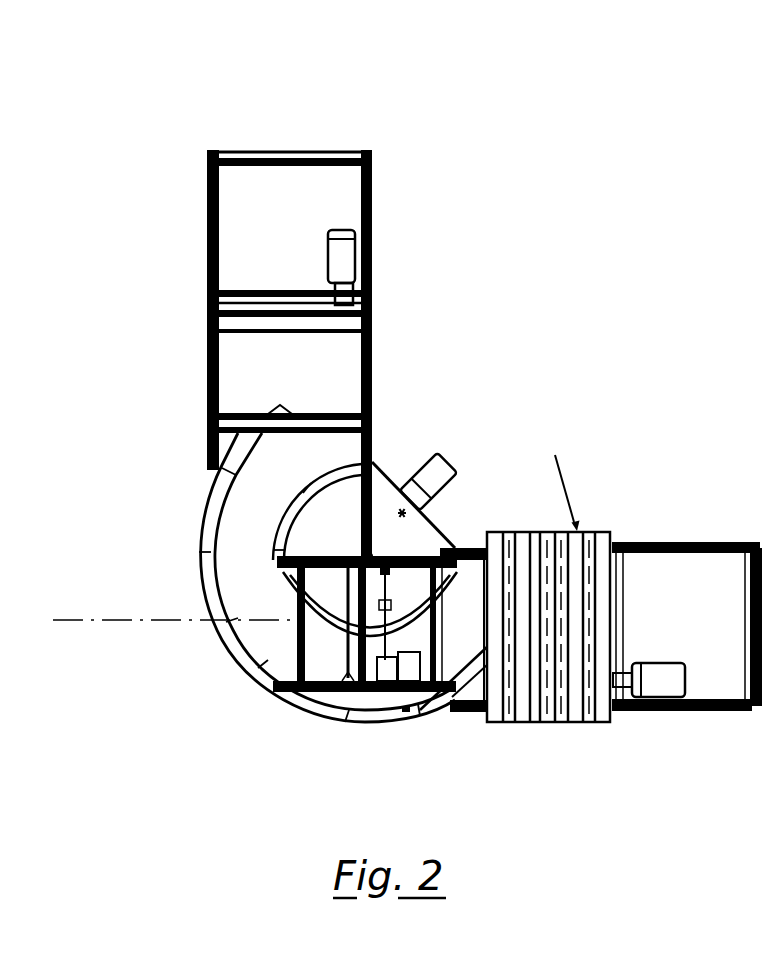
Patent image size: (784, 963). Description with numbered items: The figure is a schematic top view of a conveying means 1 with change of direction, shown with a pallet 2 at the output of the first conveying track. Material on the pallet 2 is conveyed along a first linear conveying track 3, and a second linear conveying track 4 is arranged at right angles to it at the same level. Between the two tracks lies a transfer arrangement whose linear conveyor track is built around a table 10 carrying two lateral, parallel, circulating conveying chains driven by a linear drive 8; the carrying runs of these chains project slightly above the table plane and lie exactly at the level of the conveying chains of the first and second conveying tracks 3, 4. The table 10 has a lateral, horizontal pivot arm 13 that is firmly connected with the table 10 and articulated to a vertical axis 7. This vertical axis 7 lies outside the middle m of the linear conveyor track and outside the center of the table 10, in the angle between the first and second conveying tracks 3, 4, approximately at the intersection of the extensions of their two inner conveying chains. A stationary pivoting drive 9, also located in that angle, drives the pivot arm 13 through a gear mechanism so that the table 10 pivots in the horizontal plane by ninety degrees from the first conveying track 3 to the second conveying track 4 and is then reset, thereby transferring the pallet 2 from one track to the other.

The conveying means 1 is at (632, 128).
The pallet 2 is at (518, 540).
The first linear conveying track 3 is at (703, 542).
The second linear conveying track 4 is at (373, 184).
The vertical axis 7 is at (376, 540).
The linear drive 8 is at (422, 702).
The pivoting drive 9 is at (430, 479).
The table 10 is at (250, 663).
The pivot arm 13 is at (357, 692).
The middle of the linear conveyor track m is at (81, 623).